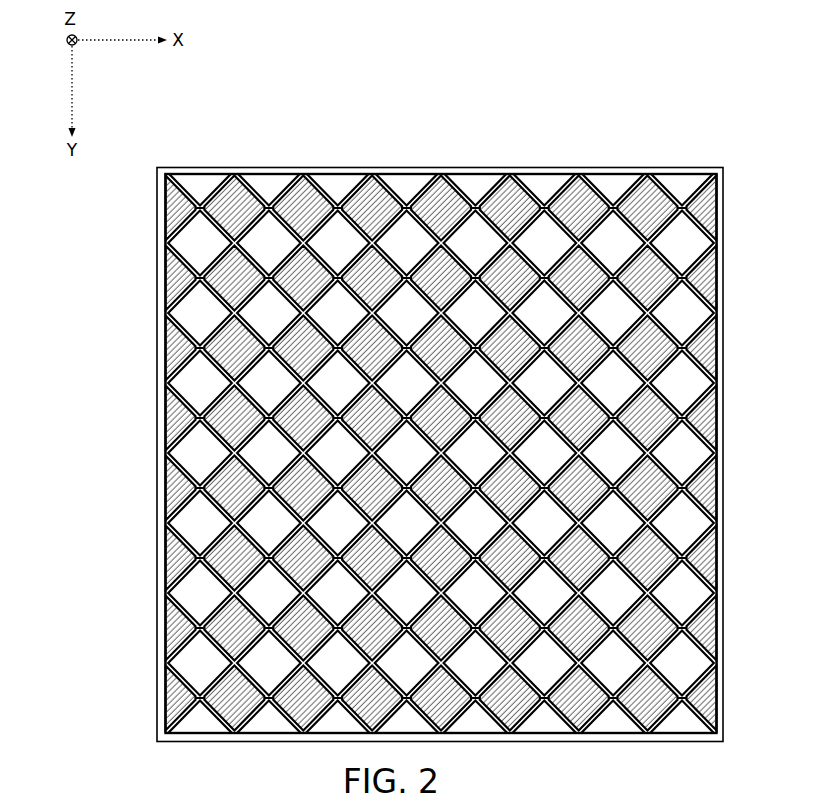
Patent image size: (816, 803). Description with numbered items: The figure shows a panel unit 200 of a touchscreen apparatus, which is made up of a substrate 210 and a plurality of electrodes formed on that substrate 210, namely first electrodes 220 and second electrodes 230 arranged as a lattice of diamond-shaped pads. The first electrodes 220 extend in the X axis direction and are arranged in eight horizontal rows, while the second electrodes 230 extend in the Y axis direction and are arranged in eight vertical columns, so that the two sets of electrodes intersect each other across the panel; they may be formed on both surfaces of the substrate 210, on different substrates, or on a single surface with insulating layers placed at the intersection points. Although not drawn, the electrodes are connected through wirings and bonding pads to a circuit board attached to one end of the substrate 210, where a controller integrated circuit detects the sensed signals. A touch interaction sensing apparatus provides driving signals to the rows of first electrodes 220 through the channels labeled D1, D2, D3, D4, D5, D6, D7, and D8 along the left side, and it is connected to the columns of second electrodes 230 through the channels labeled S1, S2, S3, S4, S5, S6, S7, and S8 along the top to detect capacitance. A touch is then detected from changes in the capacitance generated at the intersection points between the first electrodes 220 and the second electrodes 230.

The panel unit 200 is at (460, 93).
The substrate 210 is at (157, 166).
The first electrodes 220 is at (162, 217).
The second electrodes 230 is at (211, 172).
The sensing channel S1 is at (200, 167).
The sensing channel S2 is at (269, 167).
The sensing channel S3 is at (338, 167).
The sensing channel S4 is at (407, 167).
The sensing channel S5 is at (475, 167).
The sensing channel S6 is at (544, 167).
The sensing channel S7 is at (613, 167).
The sensing channel S8 is at (682, 167).
The driving channel D1 is at (158, 208).
The driving channel D2 is at (158, 278).
The driving channel D3 is at (158, 348).
The driving channel D4 is at (158, 418).
The driving channel D5 is at (158, 488).
The driving channel D6 is at (158, 558).
The driving channel D7 is at (158, 628).
The driving channel D8 is at (158, 698).